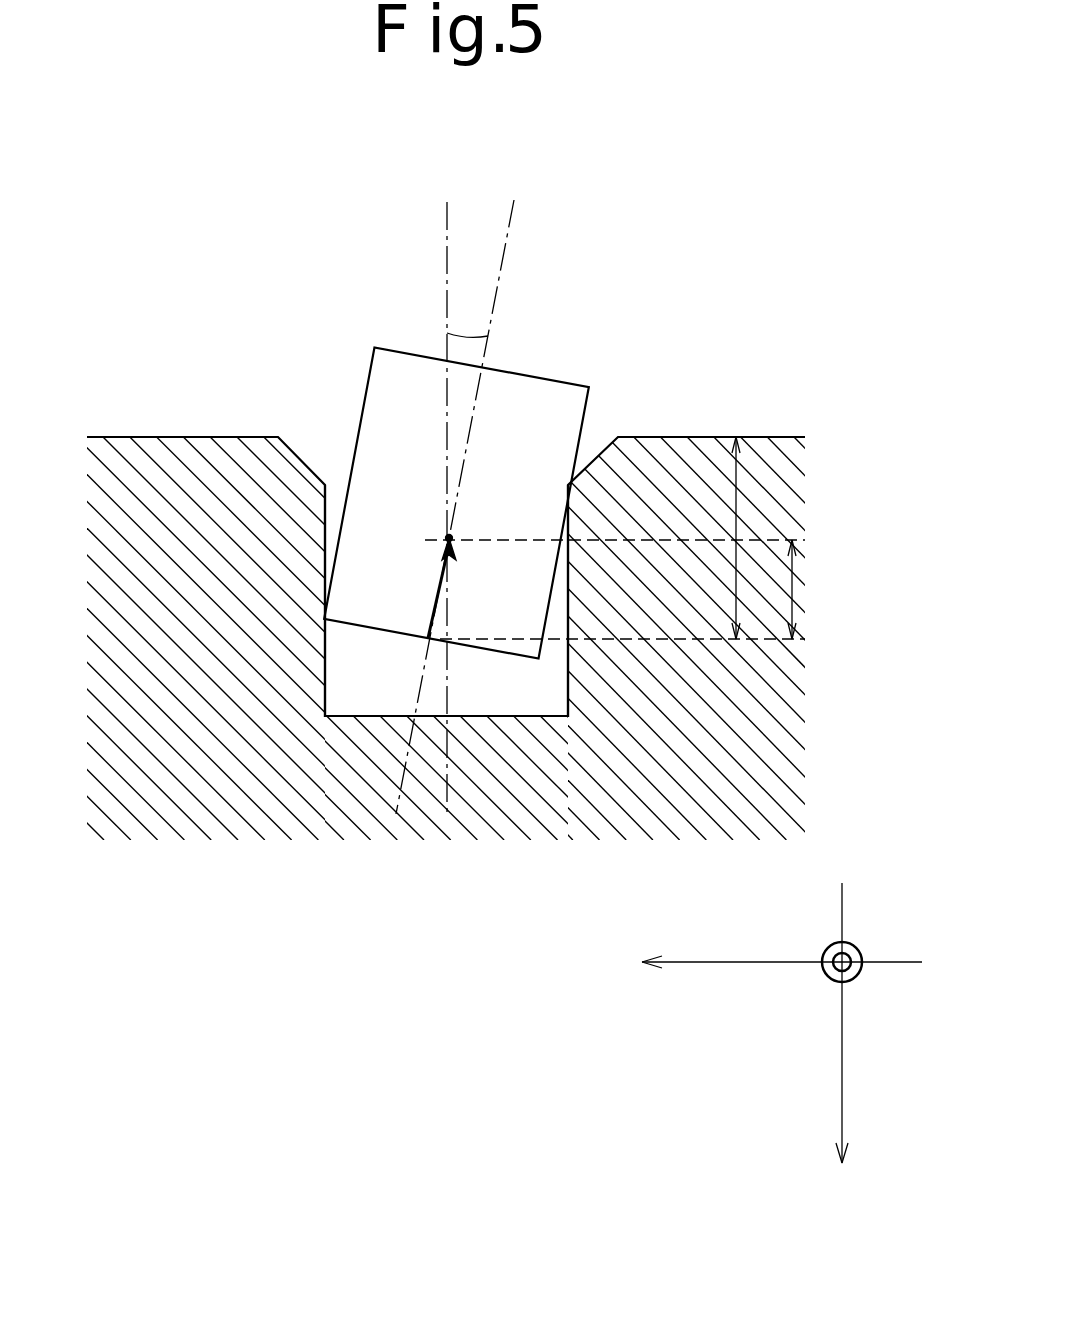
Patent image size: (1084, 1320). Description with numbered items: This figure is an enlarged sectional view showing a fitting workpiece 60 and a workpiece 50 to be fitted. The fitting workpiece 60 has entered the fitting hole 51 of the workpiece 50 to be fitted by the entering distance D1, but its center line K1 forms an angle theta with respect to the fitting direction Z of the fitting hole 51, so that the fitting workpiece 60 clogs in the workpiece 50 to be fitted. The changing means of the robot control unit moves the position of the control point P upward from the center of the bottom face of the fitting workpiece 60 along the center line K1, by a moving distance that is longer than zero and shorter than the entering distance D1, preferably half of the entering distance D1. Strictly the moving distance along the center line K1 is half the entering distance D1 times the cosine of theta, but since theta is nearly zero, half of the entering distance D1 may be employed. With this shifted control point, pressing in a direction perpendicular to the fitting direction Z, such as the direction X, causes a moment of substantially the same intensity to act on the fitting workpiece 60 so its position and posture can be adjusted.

The workpiece to be fitted 50 is at (170, 497).
The fitting hole 51 is at (327, 693).
The fitting workpiece 60 is at (540, 408).
The center line K1 is at (508, 245).
The fitting direction Z is at (446, 228).
The control point P is at (428, 640).
The entering distance D1 is at (737, 523).
The direction X is at (771, 1040).